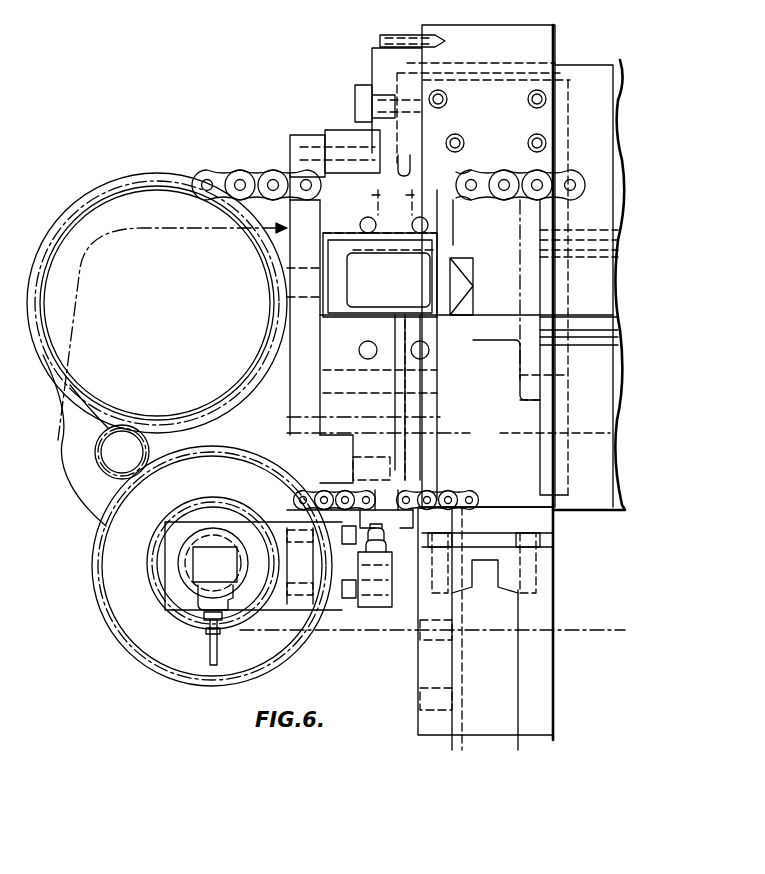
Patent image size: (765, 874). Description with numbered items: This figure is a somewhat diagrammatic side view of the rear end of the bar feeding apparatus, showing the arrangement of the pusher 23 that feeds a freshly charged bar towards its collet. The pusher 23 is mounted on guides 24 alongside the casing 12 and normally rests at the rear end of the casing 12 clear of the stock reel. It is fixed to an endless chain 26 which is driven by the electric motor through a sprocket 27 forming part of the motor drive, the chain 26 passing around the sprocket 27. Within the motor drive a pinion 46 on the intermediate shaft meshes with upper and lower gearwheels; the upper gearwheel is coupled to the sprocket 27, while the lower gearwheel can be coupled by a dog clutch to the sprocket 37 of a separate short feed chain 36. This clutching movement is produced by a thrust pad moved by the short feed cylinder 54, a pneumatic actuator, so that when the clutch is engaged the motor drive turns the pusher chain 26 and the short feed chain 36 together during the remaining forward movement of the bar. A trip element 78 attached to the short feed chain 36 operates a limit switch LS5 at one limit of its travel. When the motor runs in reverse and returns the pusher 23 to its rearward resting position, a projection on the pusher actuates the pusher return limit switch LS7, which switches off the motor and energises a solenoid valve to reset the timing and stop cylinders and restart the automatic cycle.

The casing 12 is at (575, 76).
The pusher 23 is at (425, 188).
The guides 24 is at (488, 201).
The endless chain 26 is at (222, 178).
The sprocket 27 is at (90, 248).
The short feed chain 36 is at (470, 492).
The sprocket 37 is at (148, 545).
The pinion 46 is at (118, 462).
The short feed cylinder 54 is at (208, 583).
The trip element 78 is at (388, 500).
The limit switch LS5 is at (378, 610).
The pusher return limit switch LS7 is at (380, 130).